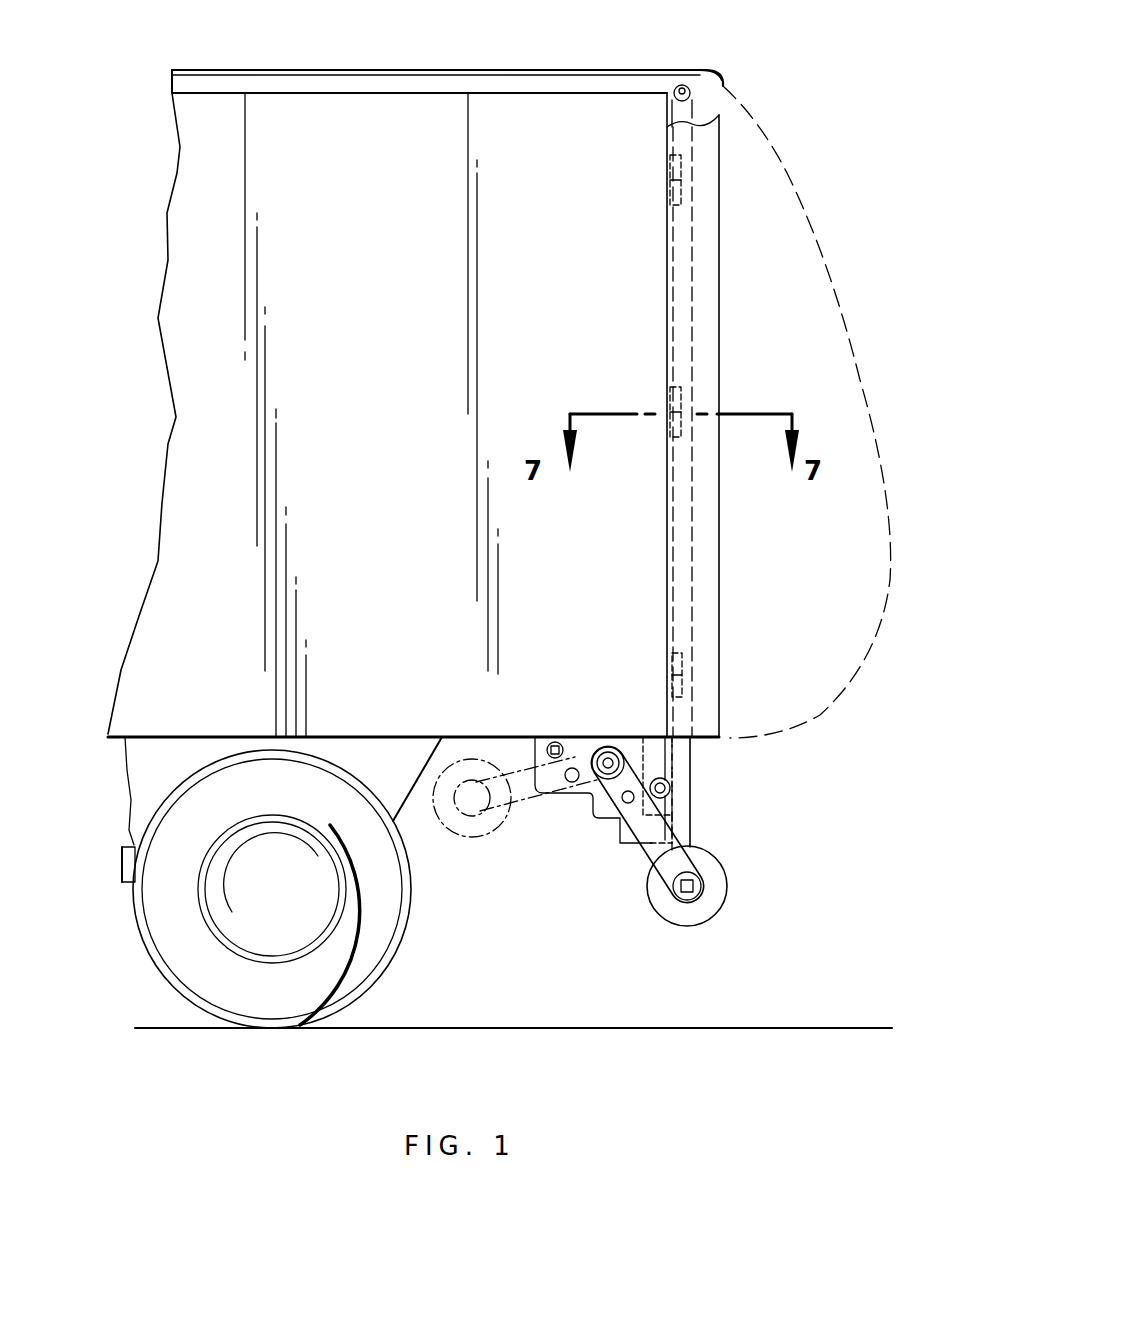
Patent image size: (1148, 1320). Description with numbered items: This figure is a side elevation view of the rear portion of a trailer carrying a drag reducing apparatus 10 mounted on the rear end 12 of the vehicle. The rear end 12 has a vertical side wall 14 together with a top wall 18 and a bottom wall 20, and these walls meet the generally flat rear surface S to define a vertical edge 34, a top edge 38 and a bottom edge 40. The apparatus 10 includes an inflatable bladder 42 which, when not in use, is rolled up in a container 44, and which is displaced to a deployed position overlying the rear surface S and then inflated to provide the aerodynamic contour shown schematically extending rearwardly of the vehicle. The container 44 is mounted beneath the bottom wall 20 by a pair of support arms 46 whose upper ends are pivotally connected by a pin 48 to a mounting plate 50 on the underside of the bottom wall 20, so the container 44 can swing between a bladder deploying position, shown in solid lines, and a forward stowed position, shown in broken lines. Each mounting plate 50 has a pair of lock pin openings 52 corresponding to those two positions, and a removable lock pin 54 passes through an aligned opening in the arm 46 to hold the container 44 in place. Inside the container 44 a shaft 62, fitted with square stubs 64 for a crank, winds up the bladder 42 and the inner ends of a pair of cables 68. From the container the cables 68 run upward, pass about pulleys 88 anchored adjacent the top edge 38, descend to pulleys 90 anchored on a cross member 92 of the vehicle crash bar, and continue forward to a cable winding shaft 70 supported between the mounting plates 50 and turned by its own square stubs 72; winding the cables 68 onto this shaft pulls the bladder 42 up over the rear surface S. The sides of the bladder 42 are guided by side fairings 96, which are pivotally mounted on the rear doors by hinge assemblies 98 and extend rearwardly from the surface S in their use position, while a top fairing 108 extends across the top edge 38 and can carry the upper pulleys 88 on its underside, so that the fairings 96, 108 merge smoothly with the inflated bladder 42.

The drag reducing apparatus 10 is at (825, 172).
The rear end 12 is at (387, 393).
The side wall 14 is at (500, 118).
The top wall 18 is at (335, 68).
The bottom wall 20 is at (470, 736).
The vertical edge 34 is at (667, 343).
The top edge 38 is at (667, 72).
The bottom edge 40 is at (650, 743).
The inflatable bladder 42 is at (858, 340).
The container 44 is at (476, 850).
The support arms 46 is at (645, 857).
The pin 48 is at (606, 757).
The mounting plate 50 is at (648, 745).
The lock pin openings 52 is at (570, 782).
The lock pin 54 is at (626, 803).
The shaft 62 is at (676, 915).
The square stubs 64 is at (695, 882).
The cables 68 is at (670, 263).
The cable winding shaft 70 is at (553, 730).
The square stubs 72 is at (548, 740).
The pulleys 88 is at (700, 93).
The pulleys 90 is at (685, 789).
The cross member 92 is at (636, 845).
The side fairings 96 is at (700, 244).
The hinge assemblies 98 is at (678, 183).
The top fairing 108 is at (720, 62).
The rear surface S is at (683, 601).